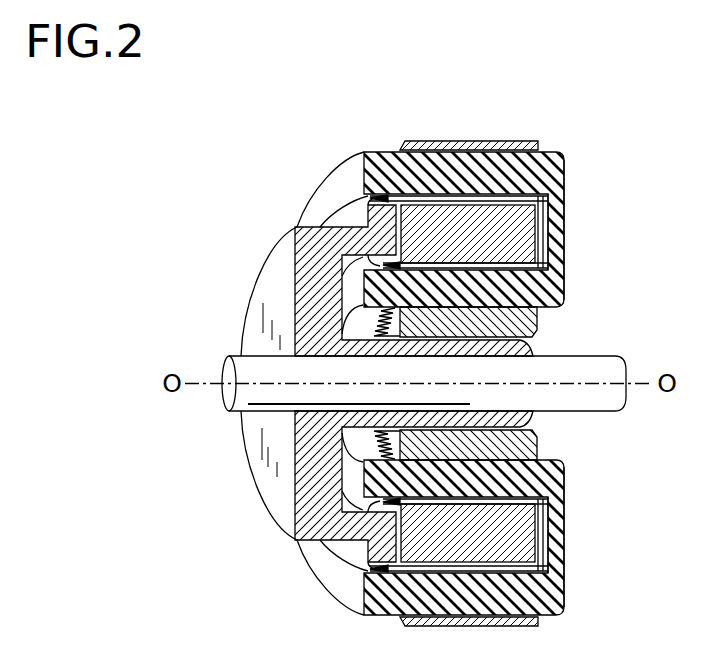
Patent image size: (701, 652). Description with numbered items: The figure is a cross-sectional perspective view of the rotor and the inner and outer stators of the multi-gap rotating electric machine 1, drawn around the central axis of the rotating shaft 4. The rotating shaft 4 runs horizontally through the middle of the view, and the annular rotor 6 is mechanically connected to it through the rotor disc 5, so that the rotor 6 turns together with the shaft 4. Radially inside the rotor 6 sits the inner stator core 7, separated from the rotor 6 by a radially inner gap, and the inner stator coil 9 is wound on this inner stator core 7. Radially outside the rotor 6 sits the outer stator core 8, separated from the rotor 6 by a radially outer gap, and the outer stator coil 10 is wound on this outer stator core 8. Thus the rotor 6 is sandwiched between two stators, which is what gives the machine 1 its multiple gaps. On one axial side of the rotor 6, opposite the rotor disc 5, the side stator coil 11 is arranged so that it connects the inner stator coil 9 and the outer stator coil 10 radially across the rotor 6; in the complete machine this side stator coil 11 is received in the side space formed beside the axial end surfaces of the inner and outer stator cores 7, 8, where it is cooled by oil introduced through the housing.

The multi-gap rotating electric machine 1 is at (322, 154).
The rotating shaft 4 is at (261, 373).
The rotor disc 5 is at (318, 328).
The annular rotor 6 is at (490, 222).
The inner stator core 7 is at (500, 327).
The outer stator core 8 is at (452, 145).
The inner stator coil 9 is at (395, 266).
The outer stator coil 10 is at (376, 170).
The side stator coil 11 is at (558, 218).